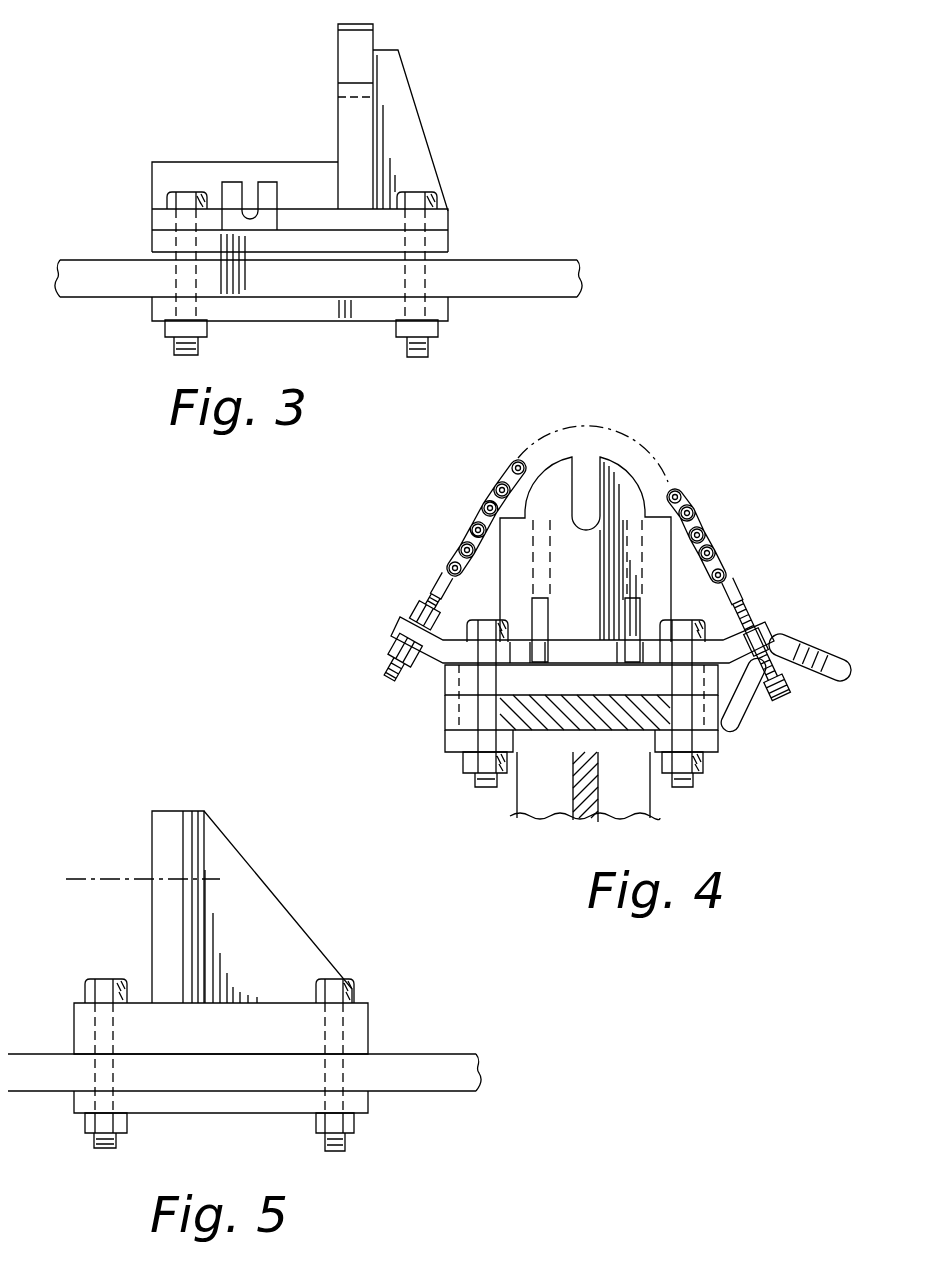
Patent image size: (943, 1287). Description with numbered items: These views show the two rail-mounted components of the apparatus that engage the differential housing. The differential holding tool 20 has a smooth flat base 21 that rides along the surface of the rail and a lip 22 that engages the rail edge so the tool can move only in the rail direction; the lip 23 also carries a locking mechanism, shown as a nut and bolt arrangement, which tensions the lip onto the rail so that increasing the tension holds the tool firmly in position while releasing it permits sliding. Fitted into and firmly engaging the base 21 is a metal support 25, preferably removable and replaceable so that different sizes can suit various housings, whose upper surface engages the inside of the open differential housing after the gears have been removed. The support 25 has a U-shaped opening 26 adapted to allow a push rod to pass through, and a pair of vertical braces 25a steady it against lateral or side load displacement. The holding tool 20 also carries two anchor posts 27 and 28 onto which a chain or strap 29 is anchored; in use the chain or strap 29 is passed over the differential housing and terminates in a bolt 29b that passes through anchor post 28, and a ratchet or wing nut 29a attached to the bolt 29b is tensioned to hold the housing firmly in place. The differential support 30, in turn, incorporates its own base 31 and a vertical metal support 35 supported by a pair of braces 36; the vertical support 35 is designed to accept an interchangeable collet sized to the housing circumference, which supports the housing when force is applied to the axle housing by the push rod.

In FIG. 3, the differential holding tool 20 is at (422, 168).
In FIG. 3, the base 21 is at (441, 244).
In FIG. 4, the base 21 is at (443, 690).
In FIG. 4, the lip 22 is at (445, 740).
In FIG. 4, the lip 23 is at (488, 790).
In FIG. 3, the metal support 25 is at (338, 44).
In FIG. 4, the metal support 25 is at (620, 508).
In FIG. 3, the vertical braces 25a is at (404, 98).
In FIG. 4, the vertical braces 25a is at (630, 567).
In FIG. 4, the U-shaped opening 26 is at (592, 463).
In FIG. 4, the anchor post 27 is at (402, 608).
In FIG. 4, the anchor post 28 is at (770, 637).
In FIG. 4, the chain or strap 29 is at (473, 523).
In FIG. 4, the ratchet or wing nut 29a is at (827, 660).
In FIG. 4, the bolt 29b is at (785, 694).
In FIG. 5, the differential support 30 is at (254, 872).
In FIG. 5, the base 31 is at (370, 1036).
In FIG. 5, the vertical metal support 35 is at (162, 816).
In FIG. 5, the braces 36 is at (251, 884).